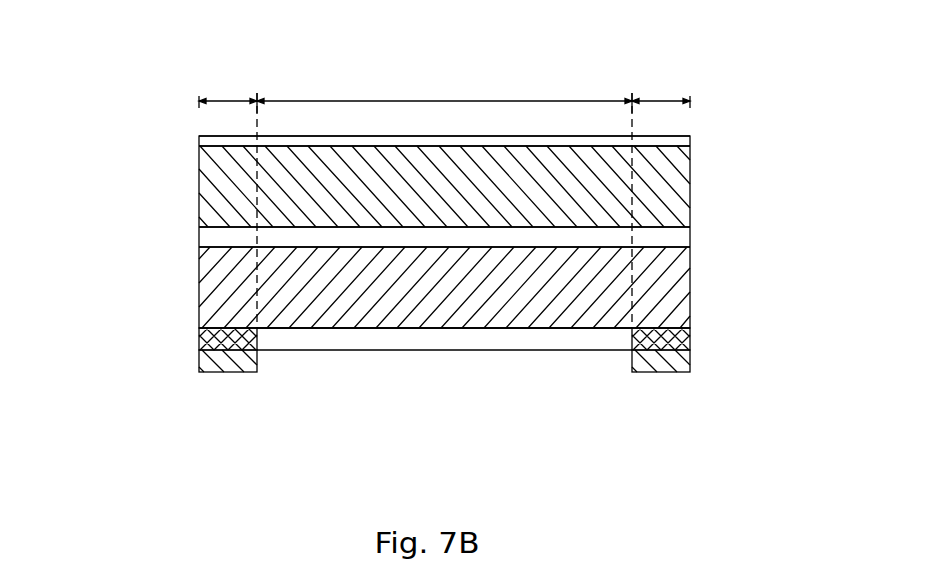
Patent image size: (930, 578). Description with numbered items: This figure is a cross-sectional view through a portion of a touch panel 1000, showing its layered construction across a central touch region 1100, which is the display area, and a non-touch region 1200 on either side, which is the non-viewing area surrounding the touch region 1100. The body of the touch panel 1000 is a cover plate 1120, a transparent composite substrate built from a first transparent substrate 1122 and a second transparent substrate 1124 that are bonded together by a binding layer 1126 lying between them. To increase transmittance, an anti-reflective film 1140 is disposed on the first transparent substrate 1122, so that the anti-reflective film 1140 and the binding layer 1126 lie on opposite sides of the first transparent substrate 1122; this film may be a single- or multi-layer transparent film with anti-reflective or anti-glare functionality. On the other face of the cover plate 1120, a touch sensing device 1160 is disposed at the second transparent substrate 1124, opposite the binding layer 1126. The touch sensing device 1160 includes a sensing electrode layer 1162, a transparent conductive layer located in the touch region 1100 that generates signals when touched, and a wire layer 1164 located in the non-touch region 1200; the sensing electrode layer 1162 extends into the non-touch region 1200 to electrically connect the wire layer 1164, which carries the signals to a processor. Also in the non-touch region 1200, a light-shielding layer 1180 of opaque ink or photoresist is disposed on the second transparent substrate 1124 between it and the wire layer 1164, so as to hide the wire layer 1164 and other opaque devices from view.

The touch panel 1000 is at (126, 39).
The touch region 1100 is at (444, 85).
The non-touch region 1200 is at (444, 197).
The cover plate 1120 is at (364, 237).
The first transparent substrate 1122 is at (200, 185).
The second transparent substrate 1124 is at (403, 287).
The binding layer 1126 is at (205, 238).
The anti-reflective film 1140 is at (693, 139).
The touch sensing device 1160 is at (444, 417).
The sensing electrode layer 1162 is at (498, 342).
The wire layer 1164 is at (532, 460).
The light-shielding layer 1180 is at (693, 337).